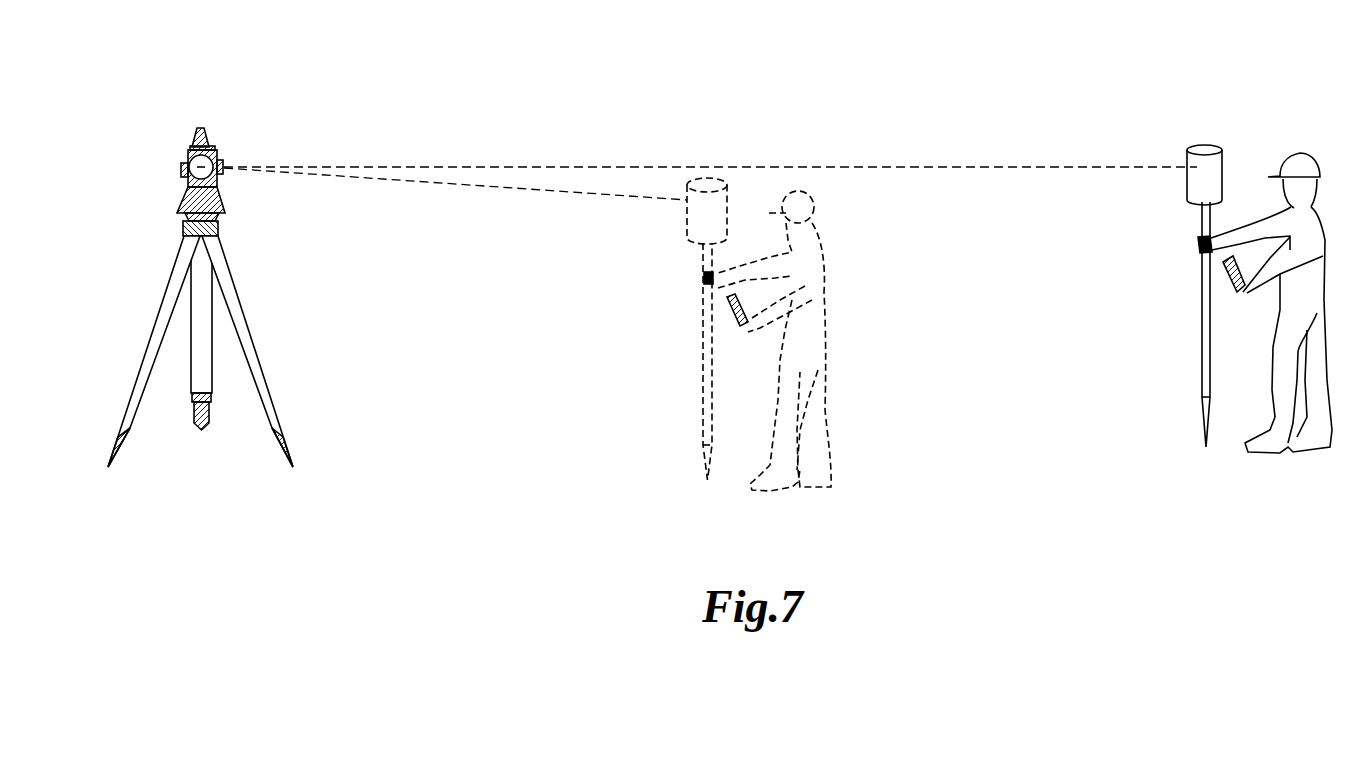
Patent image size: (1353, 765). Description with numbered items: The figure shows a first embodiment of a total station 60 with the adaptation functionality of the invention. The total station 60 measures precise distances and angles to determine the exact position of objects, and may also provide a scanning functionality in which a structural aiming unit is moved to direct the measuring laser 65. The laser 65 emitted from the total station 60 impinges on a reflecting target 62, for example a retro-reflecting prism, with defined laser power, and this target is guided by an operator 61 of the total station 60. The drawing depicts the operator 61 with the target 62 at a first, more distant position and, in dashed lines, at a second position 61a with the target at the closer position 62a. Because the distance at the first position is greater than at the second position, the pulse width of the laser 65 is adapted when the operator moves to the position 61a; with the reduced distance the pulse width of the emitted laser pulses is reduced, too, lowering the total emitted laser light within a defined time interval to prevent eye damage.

The total station 60 is at (204, 109).
The operator 61 is at (1290, 137).
The second position of the operator 61a is at (798, 180).
The target 62 is at (1203, 130).
The second position of the target 62a is at (682, 178).
The measuring laser 65 is at (982, 165).